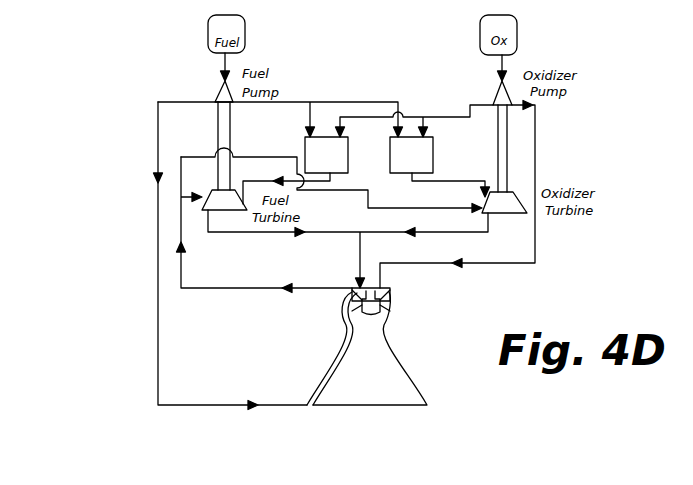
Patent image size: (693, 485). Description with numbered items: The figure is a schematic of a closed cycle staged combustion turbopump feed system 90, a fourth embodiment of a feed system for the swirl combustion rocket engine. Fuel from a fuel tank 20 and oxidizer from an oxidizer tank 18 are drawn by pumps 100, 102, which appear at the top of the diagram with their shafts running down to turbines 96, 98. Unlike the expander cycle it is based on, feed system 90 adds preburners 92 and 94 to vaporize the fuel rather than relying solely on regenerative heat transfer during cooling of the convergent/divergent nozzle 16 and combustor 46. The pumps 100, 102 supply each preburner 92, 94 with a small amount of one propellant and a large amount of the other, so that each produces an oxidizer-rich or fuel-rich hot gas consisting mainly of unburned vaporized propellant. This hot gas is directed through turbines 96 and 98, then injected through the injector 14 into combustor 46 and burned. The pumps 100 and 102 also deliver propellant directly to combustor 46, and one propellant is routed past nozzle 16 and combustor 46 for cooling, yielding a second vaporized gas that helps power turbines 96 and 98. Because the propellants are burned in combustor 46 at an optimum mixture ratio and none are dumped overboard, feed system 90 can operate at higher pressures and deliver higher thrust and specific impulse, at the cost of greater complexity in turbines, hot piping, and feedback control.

The injector 14 is at (390, 297).
The convergent/divergent nozzle 16 is at (403, 387).
The oxidizer tank 18 is at (482, 46).
The fuel tank 20 is at (233, 21).
The combustor 46 is at (325, 318).
The closed cycle staged combustion turbopump feed system 90 is at (568, 109).
The preburner 92 is at (326, 155).
The preburner 94 is at (411, 155).
The turbine 96 is at (232, 200).
The turbine 98 is at (505, 200).
The pump 100 is at (215, 99).
The pump 102 is at (494, 101).